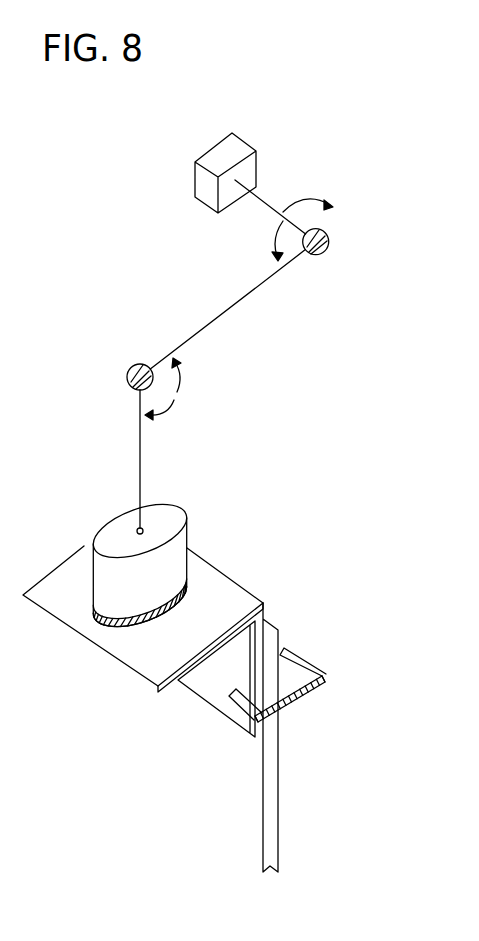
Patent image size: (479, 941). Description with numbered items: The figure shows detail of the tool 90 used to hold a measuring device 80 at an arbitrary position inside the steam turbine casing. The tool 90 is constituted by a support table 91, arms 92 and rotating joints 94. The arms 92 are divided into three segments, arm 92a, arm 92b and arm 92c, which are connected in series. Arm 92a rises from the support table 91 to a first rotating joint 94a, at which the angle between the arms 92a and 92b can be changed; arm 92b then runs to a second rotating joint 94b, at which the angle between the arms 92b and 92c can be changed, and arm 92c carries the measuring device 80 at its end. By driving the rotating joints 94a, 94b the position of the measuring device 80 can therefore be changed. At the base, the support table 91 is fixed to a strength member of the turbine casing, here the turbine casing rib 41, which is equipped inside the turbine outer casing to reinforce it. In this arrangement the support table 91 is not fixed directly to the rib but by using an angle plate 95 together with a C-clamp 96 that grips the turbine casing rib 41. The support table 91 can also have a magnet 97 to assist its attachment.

The tool 90 is at (102, 224).
The measuring device 80 is at (247, 138).
The arm 92 is at (254, 338).
The arm 92a is at (142, 453).
The arm 92b is at (231, 306).
The arm 92c is at (273, 208).
The rotating joint 94 is at (203, 309).
The rotating joint 94a is at (127, 380).
The rotating joint 94b is at (321, 257).
The support table 91 is at (183, 551).
The magnet 97 is at (187, 587).
The angle plate 95 is at (75, 632).
The C-clamp 96 is at (292, 703).
The turbine casing rib 41 is at (280, 812).